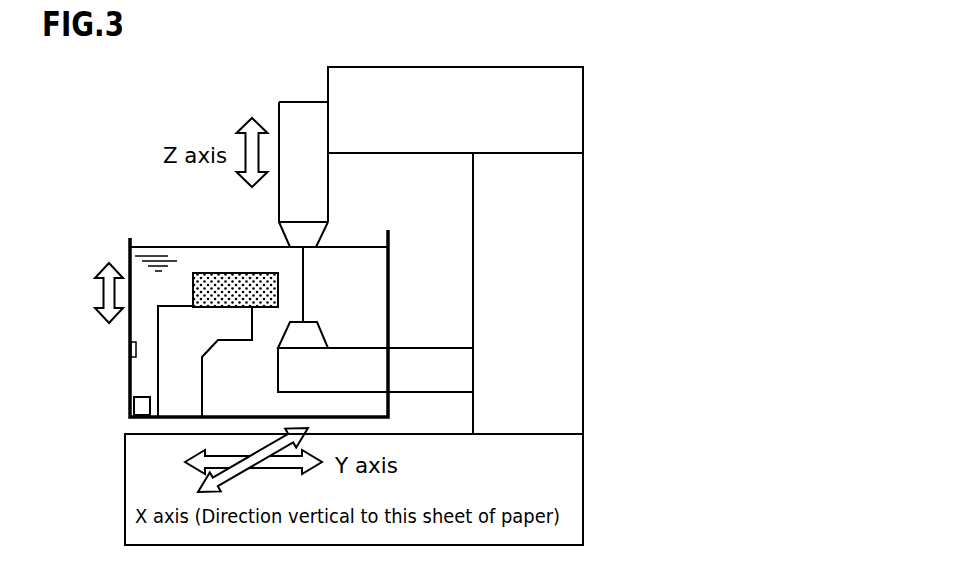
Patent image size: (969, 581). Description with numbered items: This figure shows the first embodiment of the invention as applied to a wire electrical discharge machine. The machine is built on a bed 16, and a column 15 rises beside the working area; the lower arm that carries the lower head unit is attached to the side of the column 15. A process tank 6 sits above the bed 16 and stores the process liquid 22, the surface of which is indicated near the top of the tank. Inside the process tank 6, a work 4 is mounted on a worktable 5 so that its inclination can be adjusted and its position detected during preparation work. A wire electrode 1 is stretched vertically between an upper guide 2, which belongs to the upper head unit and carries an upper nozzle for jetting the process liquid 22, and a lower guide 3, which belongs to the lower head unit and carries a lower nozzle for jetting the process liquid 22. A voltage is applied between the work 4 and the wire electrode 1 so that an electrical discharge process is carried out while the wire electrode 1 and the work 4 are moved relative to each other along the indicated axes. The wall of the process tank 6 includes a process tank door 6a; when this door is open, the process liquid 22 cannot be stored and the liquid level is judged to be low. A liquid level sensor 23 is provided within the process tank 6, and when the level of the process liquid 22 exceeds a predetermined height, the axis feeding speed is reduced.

The wire electrode 1 is at (303, 270).
The upper guide 2 is at (315, 233).
The lower guide 3 is at (313, 338).
The work 4 is at (210, 273).
The worktable 5 is at (158, 365).
The process tank 6 is at (388, 263).
The process tank door 6a is at (128, 342).
The column 15 is at (583, 401).
The bed 16 is at (583, 490).
The process liquid 22 is at (150, 247).
The liquid level sensor 23 is at (137, 408).